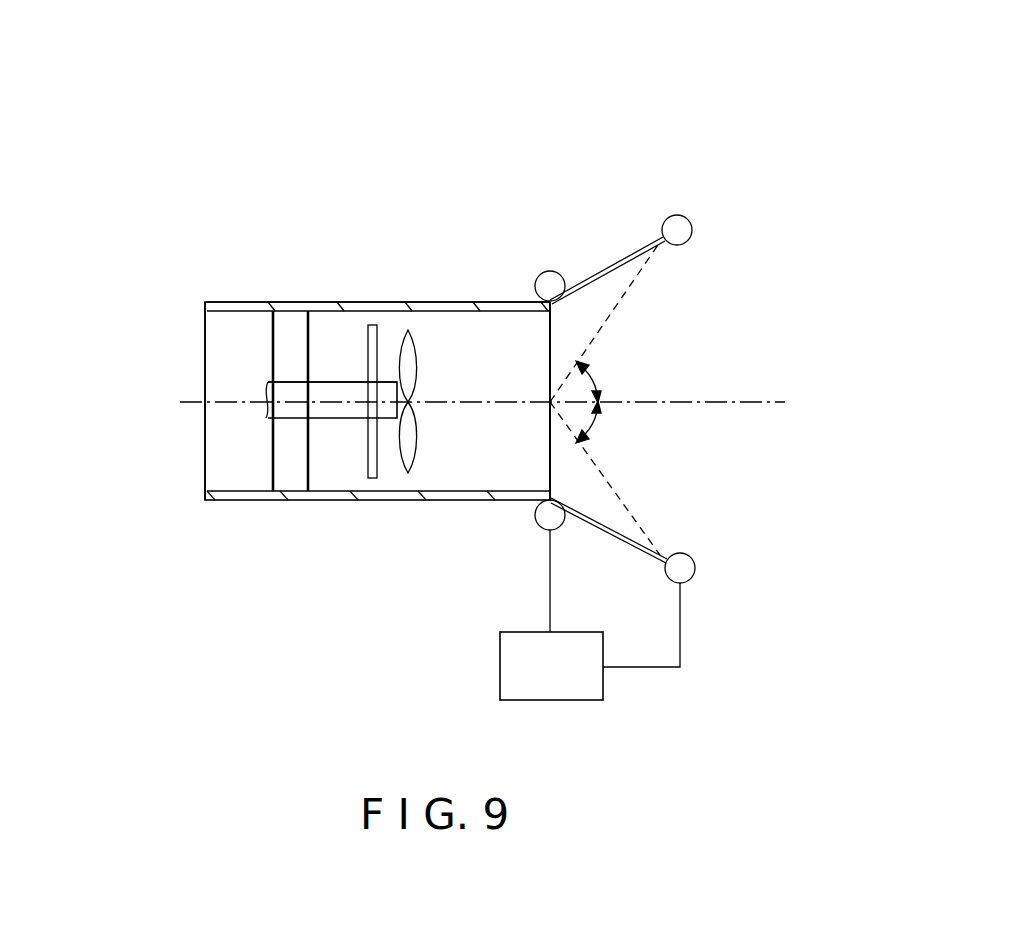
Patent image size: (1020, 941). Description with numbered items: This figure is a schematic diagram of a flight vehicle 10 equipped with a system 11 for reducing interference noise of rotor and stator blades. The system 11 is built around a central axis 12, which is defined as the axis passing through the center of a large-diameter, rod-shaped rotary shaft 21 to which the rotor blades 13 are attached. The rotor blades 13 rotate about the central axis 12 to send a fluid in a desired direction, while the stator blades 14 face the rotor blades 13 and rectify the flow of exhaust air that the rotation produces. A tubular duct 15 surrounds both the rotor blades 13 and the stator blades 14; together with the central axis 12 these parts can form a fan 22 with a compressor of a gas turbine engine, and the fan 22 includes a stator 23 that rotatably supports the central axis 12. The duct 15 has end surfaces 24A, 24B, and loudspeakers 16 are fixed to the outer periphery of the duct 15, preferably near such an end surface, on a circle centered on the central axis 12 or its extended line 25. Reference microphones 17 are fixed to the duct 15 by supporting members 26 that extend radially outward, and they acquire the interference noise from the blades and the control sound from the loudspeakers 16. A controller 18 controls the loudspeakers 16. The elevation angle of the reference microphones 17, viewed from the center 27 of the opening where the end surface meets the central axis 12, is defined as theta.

The flight vehicle 10 is at (489, 76).
The system for reducing interference noise of rotor and stator blades 11 is at (534, 111).
The central axis 12 is at (328, 418).
The rotor blades 13 is at (417, 348).
The stator blades 14 is at (368, 351).
The duct 15 is at (485, 301).
The loudspeakers 16 is at (551, 271).
The reference microphones 17 is at (690, 220).
The controller 18 is at (548, 701).
The rotary shaft 21 is at (330, 382).
The fan 22 is at (405, 288).
The stator 23 is at (289, 322).
The end surface 24A is at (549, 357).
The end surface 24B is at (205, 368).
The extended line 25 is at (703, 402).
The supporting member 26 is at (617, 262).
The center of opening 27 is at (549, 403).